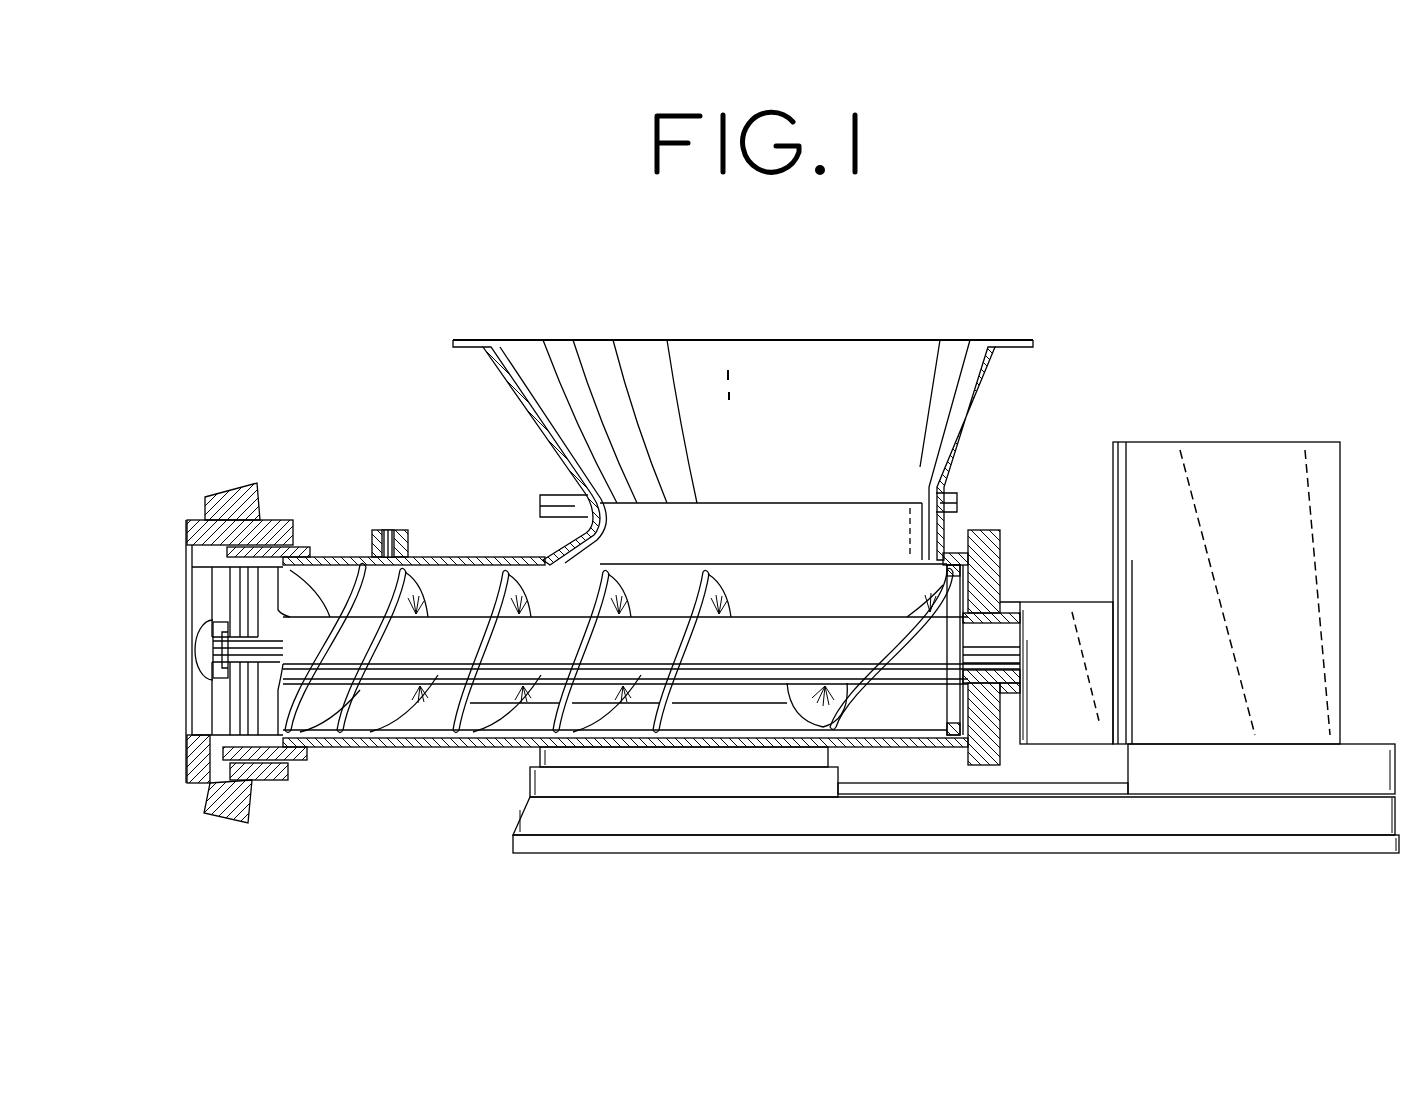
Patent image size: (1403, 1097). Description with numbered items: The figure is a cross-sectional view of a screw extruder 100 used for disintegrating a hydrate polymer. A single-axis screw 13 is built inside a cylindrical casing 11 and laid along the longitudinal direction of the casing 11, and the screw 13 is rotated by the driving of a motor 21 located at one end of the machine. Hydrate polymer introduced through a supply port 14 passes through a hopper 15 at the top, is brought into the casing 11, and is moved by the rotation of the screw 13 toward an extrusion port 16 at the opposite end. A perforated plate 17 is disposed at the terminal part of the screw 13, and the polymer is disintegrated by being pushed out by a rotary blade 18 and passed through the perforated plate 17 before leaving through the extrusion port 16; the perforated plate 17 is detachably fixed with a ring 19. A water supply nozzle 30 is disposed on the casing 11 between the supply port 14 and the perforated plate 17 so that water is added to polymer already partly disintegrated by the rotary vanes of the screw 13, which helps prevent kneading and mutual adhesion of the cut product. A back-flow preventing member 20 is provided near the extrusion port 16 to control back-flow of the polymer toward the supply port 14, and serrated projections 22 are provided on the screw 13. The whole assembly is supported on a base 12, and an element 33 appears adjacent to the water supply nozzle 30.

The screw extruder 100 is at (232, 259).
The cylindrical casing 11 is at (492, 552).
The base 12 is at (597, 847).
The screw 13 is at (443, 667).
The supply port 14 is at (838, 367).
The hopper 15 is at (975, 410).
The extrusion port 16 is at (184, 656).
The perforated plate 17 is at (263, 780).
The rotary blade 18 is at (265, 716).
The ring 19 is at (216, 500).
The back-flow preventing member 20 is at (351, 580).
The motor 21 is at (1222, 455).
The serrated projections 22 is at (756, 705).
The water supply nozzle 30 is at (406, 532).
The bolt 33 is at (388, 550).